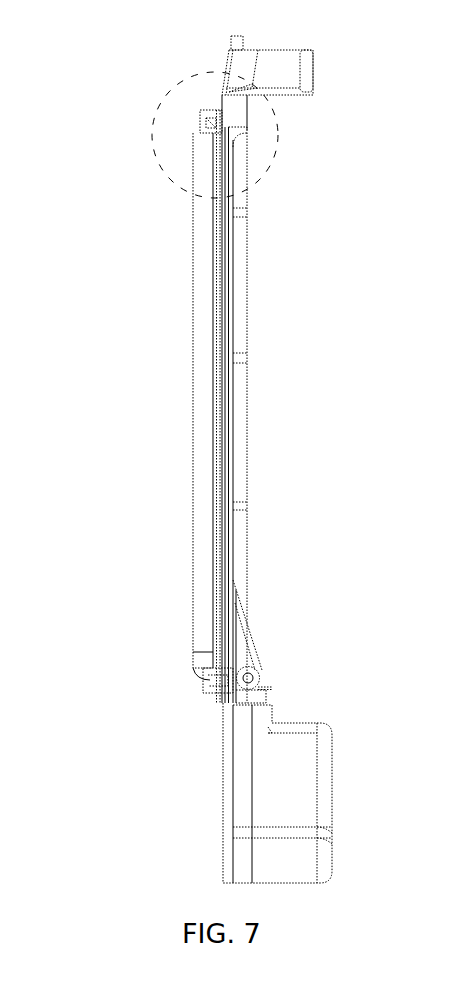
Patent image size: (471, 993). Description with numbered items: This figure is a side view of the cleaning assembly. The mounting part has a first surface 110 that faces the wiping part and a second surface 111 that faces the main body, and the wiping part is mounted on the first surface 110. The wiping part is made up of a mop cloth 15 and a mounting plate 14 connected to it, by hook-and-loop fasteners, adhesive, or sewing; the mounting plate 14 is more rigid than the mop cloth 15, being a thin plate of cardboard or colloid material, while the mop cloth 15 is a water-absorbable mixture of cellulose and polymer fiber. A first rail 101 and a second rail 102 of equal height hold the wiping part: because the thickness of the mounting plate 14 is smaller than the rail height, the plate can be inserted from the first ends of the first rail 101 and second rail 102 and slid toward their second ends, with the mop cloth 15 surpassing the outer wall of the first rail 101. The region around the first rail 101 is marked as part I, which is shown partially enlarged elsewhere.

The part I is at (215, 75).
The first rail 101 is at (203, 120).
The second rail 102 is at (222, 682).
The mounting plate 14 is at (213, 247).
The mop cloth 15 is at (207, 370).
The first surface 110 is at (222, 467).
The second surface 111 is at (247, 440).